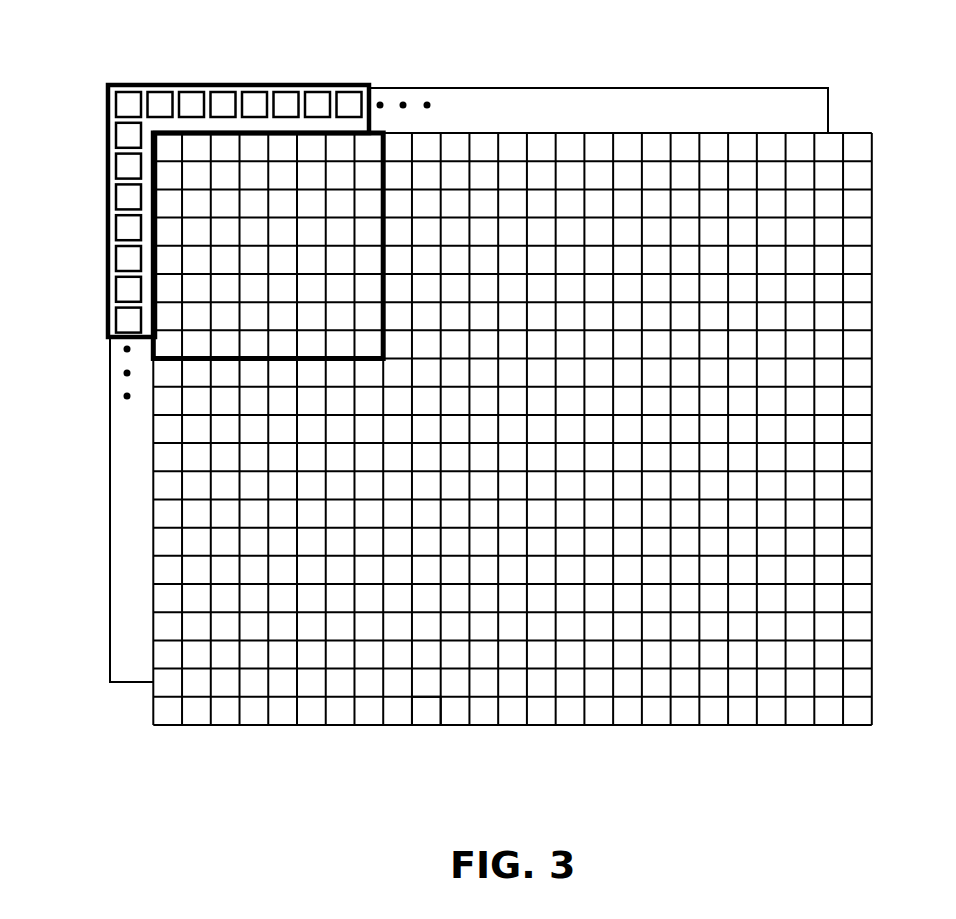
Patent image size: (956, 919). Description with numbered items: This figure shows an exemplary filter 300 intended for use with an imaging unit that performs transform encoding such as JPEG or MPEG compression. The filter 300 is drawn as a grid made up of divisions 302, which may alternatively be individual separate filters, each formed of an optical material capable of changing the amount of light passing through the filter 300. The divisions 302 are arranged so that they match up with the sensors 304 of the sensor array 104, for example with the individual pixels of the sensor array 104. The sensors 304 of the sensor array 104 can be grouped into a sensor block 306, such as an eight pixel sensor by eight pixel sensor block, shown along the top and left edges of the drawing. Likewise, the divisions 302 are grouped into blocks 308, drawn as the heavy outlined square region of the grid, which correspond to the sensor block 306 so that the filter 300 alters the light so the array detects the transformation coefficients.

The sensor array 104 is at (557, 88).
The filter 300 is at (225, 727).
The divisions 302 is at (427, 712).
The sensors 304 is at (127, 105).
The sensor block 306 is at (207, 85).
The blocks 308 is at (173, 236).